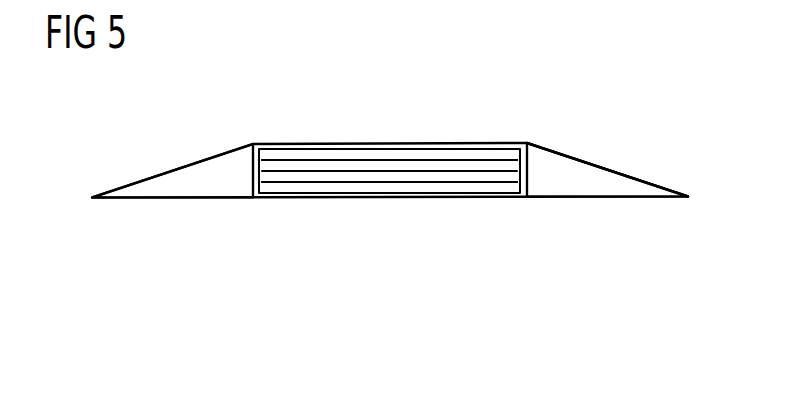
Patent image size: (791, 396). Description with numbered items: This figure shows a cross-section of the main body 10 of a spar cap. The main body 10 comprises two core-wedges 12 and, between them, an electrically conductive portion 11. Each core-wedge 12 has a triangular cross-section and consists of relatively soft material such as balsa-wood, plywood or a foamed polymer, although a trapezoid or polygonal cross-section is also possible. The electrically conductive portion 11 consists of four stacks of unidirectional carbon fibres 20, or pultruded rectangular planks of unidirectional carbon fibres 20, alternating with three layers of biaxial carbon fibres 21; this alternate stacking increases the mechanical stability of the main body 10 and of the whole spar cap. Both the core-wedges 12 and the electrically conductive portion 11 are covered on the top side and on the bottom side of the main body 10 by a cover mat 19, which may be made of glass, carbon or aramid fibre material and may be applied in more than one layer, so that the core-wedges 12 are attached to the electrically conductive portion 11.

The main body 10 is at (203, 145).
The electrically conductive portion 11 is at (501, 116).
The core-wedges 12 is at (203, 185).
The cover mat 19 is at (573, 153).
The stacks of unidirectional carbon fibres 20 is at (422, 165).
The layers of biaxial carbon fibres 21 is at (327, 182).